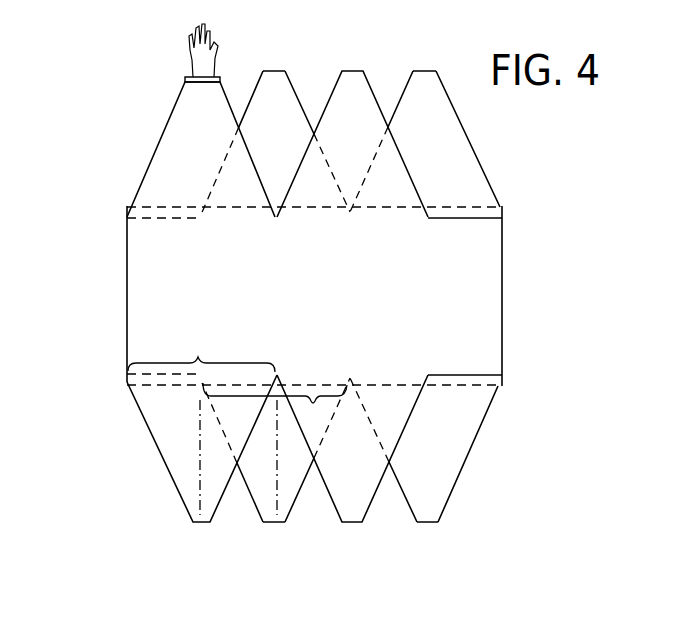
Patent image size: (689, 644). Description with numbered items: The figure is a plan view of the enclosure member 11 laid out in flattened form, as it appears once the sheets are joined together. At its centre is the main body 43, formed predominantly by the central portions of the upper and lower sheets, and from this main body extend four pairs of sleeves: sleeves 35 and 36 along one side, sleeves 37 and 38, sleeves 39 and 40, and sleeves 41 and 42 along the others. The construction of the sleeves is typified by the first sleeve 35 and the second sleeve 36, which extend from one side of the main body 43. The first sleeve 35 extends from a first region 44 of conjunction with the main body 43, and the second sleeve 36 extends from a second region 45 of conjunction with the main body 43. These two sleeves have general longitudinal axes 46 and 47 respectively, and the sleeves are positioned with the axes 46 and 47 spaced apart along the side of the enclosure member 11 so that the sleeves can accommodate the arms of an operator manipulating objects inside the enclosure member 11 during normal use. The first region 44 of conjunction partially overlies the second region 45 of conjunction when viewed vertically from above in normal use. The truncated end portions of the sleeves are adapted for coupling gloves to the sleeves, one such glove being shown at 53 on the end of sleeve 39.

The enclosure member 11 is at (106, 286).
The first sleeve 35 is at (160, 435).
The second sleeve 36 is at (257, 488).
The sleeve 37 is at (343, 495).
The sleeve 38 is at (418, 493).
The sleeve 39 is at (172, 132).
The sleeve 40 is at (263, 90).
The sleeve 41 is at (337, 90).
The sleeve 42 is at (412, 90).
The main body 43 is at (314, 296).
The first region of conjunction 44 is at (198, 357).
The second region of conjunction 45 is at (313, 400).
The longitudinal axis 46 is at (200, 465).
The longitudinal axis 47 is at (277, 507).
The glove 53 is at (190, 60).